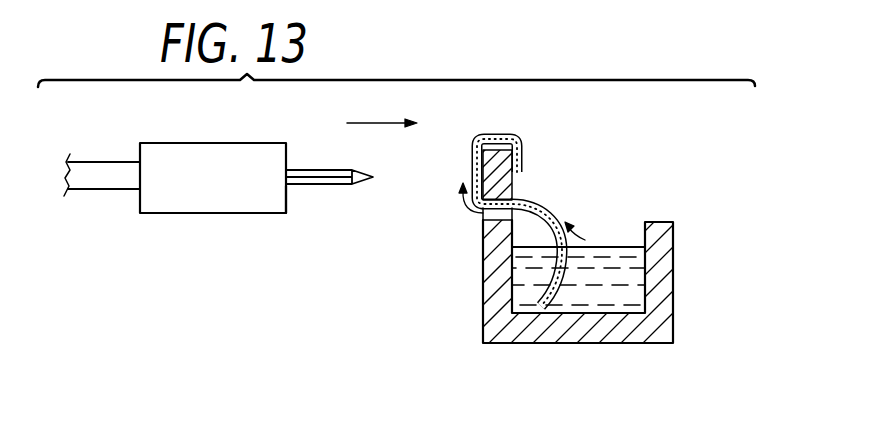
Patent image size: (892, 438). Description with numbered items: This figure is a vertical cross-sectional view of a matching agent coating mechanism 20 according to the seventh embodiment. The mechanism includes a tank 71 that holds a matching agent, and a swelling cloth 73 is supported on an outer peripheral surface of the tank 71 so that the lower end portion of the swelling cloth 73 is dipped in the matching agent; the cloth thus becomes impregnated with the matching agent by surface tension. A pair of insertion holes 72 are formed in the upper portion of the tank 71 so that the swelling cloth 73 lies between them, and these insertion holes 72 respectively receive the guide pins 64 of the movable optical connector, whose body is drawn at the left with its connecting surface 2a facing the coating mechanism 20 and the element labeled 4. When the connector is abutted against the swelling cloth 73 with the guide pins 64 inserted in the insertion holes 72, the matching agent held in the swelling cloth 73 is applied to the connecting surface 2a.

The needle holder 4 is at (210, 202).
The guide pins 64 is at (312, 178).
The connecting surface 2a is at (288, 190).
The insertion holes 72 is at (494, 168).
The swelling cloth 73 is at (537, 203).
The matching agent coating mechanism 20 is at (690, 239).
The tank 71 is at (640, 279).